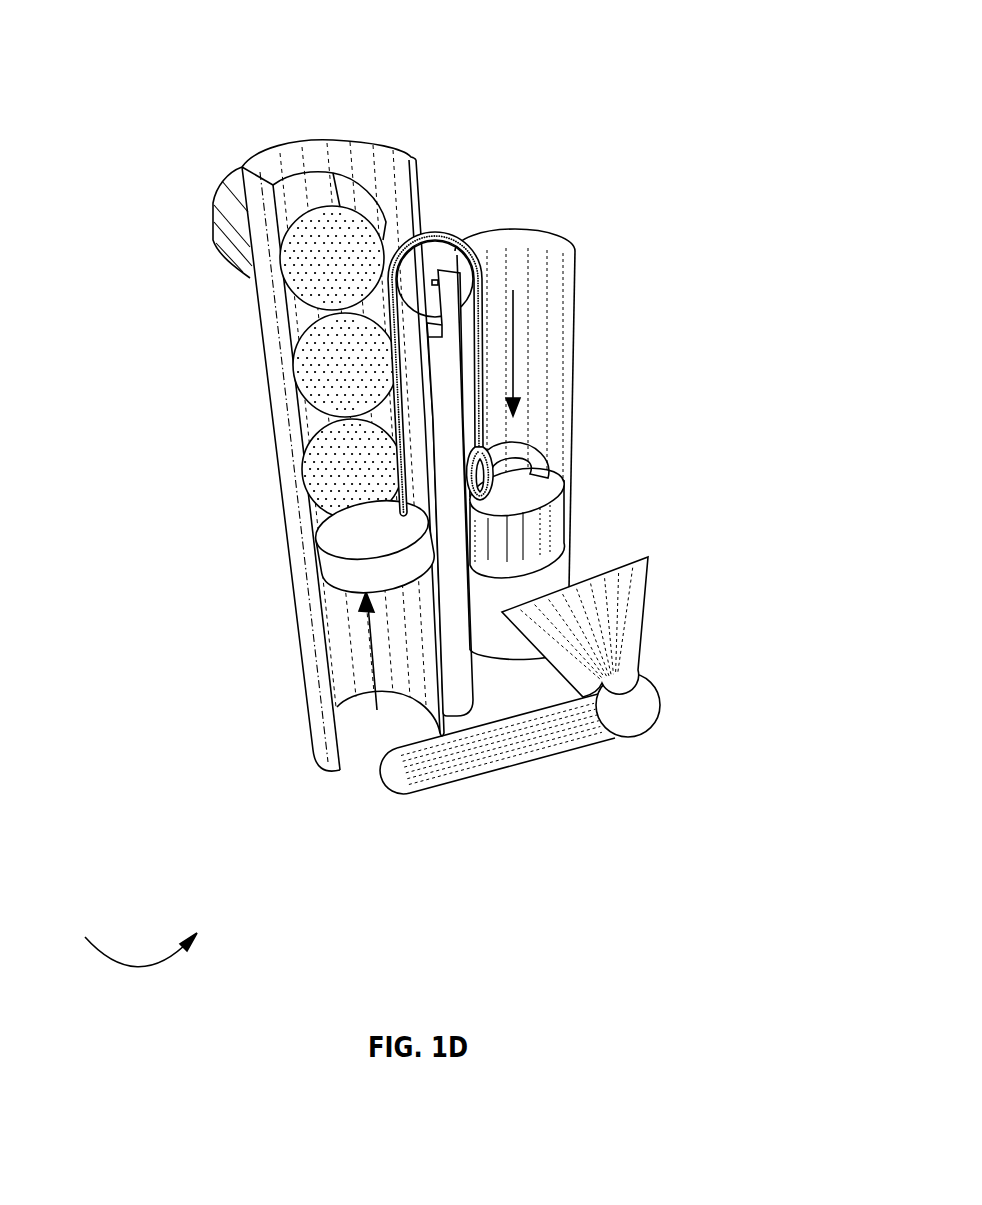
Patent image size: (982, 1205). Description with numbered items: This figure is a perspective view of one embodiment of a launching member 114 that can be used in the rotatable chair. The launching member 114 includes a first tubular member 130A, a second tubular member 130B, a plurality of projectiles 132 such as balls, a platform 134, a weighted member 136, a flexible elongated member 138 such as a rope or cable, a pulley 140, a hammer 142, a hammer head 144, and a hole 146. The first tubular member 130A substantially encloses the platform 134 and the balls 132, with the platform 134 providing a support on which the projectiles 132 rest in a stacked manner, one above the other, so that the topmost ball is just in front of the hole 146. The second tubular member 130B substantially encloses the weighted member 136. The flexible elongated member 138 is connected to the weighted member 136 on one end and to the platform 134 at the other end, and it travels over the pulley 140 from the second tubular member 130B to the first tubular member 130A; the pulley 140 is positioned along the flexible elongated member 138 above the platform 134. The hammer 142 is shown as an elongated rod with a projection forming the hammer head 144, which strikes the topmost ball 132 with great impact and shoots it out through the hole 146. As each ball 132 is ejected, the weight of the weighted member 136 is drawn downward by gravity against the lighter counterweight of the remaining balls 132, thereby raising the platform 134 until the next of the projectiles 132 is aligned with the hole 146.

The launching member 114 is at (120, 938).
The first tubular member 130A is at (300, 648).
The second tubular member 130B is at (574, 310).
The plurality of projectiles 132 is at (307, 373).
The platform 134 is at (360, 539).
The weighted member 136 is at (570, 476).
The flexible elongated member 138 is at (437, 232).
The pulley 140 is at (408, 308).
The hammer 142 is at (553, 758).
The hammer head 144 is at (648, 558).
The hole 146 is at (212, 217).